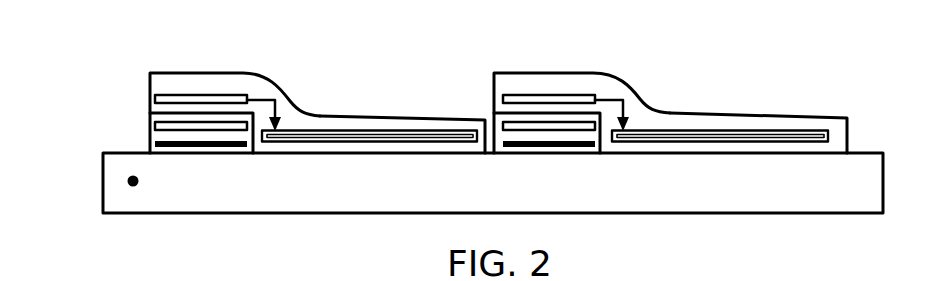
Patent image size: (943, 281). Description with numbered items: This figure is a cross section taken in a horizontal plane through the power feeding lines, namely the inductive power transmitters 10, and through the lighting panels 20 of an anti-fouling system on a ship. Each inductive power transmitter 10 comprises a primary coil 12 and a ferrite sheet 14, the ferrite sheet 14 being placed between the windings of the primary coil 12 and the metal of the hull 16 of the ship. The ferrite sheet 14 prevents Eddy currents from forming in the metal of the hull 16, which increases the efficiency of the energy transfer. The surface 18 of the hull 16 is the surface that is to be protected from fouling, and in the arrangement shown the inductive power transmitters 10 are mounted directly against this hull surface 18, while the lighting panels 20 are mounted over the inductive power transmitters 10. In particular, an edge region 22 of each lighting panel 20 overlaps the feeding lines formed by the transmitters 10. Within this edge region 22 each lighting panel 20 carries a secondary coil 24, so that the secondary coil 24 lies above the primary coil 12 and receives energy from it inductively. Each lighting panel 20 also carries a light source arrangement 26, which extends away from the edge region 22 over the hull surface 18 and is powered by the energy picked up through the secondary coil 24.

The inductive power transmitter 10 is at (253, 144).
The primary coil 12 is at (148, 118).
The ferrite sheet 14 is at (149, 137).
The hull 16 is at (130, 184).
The hull surface 18 is at (115, 153).
The lighting panel 20 is at (400, 96).
The edge region 22 is at (246, 69).
The secondary coil 24 is at (175, 95).
The light source arrangement 26 is at (348, 130).